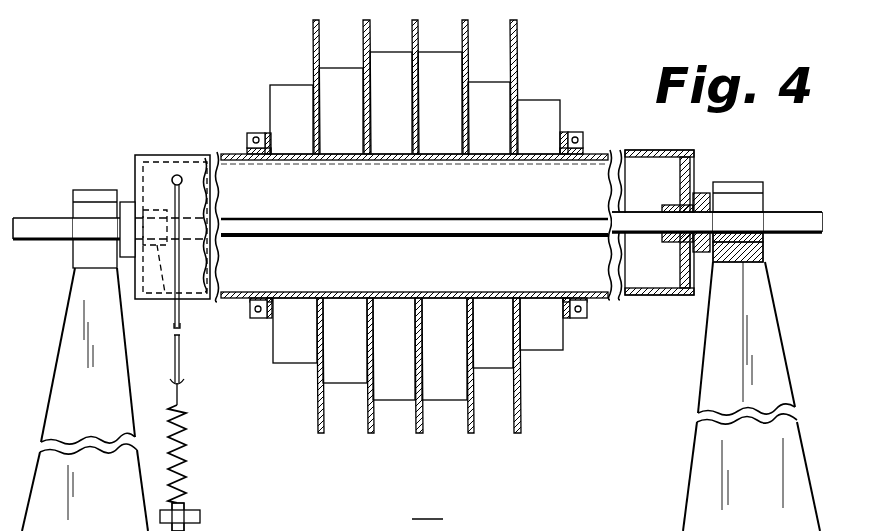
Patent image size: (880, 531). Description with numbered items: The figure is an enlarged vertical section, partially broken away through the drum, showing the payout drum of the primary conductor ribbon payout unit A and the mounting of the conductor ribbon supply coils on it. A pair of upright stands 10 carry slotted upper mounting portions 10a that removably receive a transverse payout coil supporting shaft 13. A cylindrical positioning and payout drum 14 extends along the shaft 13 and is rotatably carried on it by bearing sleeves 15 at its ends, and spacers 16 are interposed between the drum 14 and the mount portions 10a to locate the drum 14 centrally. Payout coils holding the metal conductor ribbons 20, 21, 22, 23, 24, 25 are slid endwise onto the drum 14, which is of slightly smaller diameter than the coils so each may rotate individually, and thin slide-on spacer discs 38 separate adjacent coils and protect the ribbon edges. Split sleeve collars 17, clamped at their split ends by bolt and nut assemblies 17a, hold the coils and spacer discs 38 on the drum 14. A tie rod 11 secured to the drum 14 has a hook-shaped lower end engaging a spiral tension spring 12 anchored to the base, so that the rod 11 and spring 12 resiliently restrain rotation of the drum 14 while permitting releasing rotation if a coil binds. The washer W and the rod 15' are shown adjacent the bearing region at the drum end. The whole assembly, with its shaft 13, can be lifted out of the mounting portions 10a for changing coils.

The upright stand 10 is at (55, 352).
The slotted upper mounting portion 10a is at (85, 243).
The tie rod 11 is at (185, 355).
The spiral tension spring 12 is at (187, 435).
The payout coil supporting shaft 13 is at (805, 210).
The positioning and payout drum 14 is at (653, 149).
The bearing sleeve 15 is at (414, 227).
The actuating rod 15' is at (157, 255).
The spacer 16 is at (701, 193).
The split sleeve collar 17 is at (248, 147).
The bolt and nut assembly 17a is at (255, 133).
The metal conductor ribbon 20 is at (290, 85).
The metal conductor ribbon 21 is at (342, 68).
The metal conductor ribbon 22 is at (390, 52).
The metal conductor ribbon 23 is at (438, 52).
The metal conductor ribbon 24 is at (493, 82).
The metal conductor ribbon 25 is at (545, 100).
The slide-on spacer disc 38 is at (313, 30).
The washer W is at (694, 252).
The primary conductor ribbon payout unit A is at (427, 504).